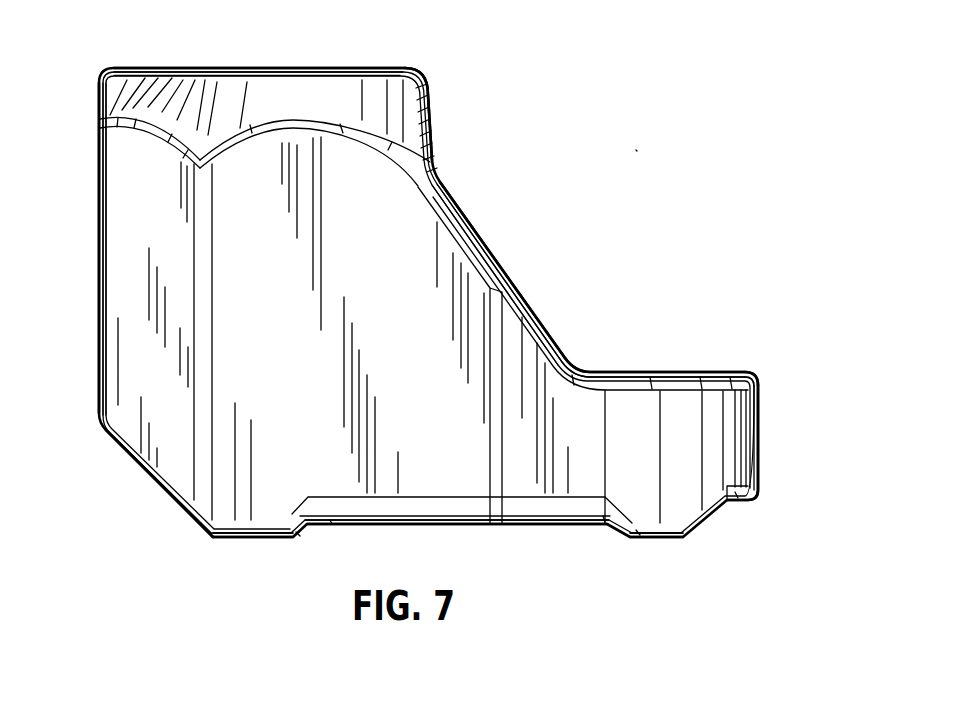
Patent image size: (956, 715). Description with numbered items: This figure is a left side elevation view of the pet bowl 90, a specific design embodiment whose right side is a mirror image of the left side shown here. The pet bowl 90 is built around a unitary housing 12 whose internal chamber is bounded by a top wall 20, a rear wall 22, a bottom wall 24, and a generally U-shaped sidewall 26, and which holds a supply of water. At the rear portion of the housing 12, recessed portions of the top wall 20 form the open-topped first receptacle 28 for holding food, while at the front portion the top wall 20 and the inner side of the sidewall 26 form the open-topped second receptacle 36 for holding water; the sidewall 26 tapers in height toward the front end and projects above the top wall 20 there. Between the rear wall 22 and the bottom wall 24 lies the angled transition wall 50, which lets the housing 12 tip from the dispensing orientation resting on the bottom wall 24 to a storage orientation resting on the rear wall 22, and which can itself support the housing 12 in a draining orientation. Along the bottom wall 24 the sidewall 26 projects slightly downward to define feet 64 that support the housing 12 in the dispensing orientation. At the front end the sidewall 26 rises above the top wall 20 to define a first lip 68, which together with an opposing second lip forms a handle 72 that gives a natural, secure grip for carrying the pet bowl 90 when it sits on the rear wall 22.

The housing 12 is at (130, 333).
The top wall 20 is at (275, 68).
The rear wall 22 is at (98, 246).
The bottom wall 24 is at (460, 526).
The sidewall 26 is at (492, 257).
The first receptacle 28 is at (349, 91).
The second receptacle 36 is at (637, 369).
The transition wall 50 is at (156, 482).
The feet 64 is at (248, 538).
The first lip 68 is at (733, 372).
The handle 72 is at (764, 453).
The pet bowl 90 is at (619, 163).